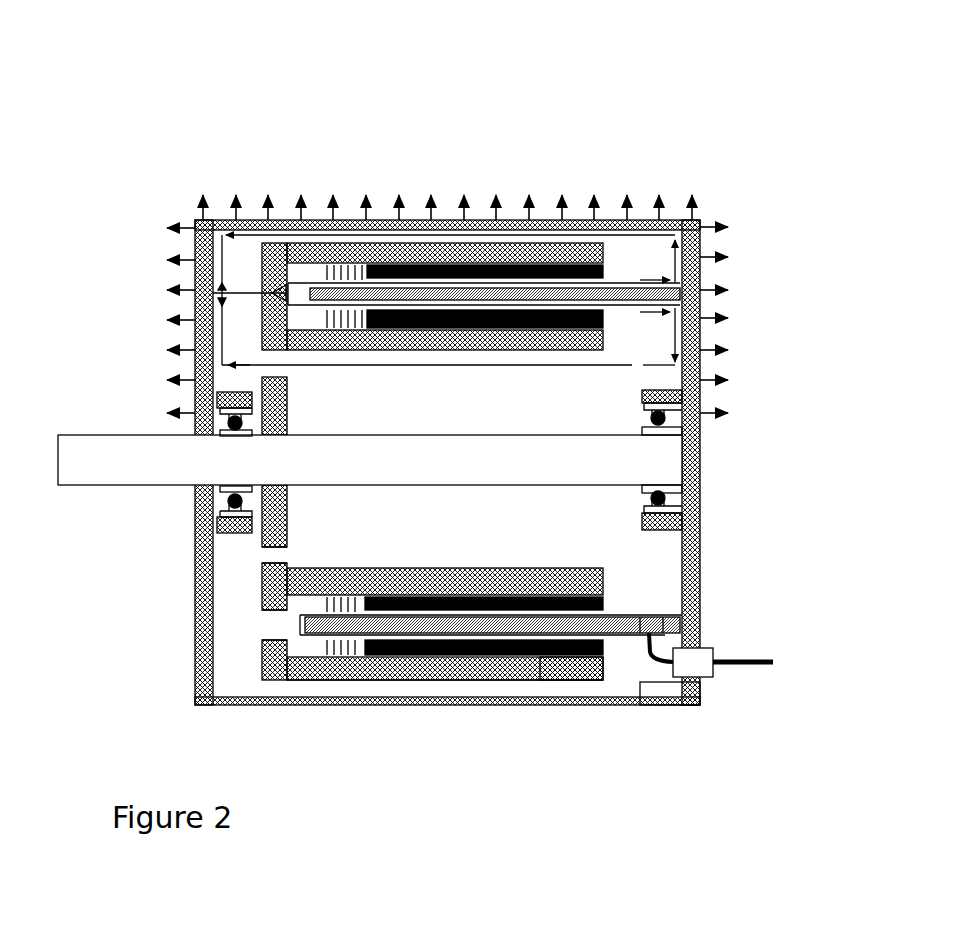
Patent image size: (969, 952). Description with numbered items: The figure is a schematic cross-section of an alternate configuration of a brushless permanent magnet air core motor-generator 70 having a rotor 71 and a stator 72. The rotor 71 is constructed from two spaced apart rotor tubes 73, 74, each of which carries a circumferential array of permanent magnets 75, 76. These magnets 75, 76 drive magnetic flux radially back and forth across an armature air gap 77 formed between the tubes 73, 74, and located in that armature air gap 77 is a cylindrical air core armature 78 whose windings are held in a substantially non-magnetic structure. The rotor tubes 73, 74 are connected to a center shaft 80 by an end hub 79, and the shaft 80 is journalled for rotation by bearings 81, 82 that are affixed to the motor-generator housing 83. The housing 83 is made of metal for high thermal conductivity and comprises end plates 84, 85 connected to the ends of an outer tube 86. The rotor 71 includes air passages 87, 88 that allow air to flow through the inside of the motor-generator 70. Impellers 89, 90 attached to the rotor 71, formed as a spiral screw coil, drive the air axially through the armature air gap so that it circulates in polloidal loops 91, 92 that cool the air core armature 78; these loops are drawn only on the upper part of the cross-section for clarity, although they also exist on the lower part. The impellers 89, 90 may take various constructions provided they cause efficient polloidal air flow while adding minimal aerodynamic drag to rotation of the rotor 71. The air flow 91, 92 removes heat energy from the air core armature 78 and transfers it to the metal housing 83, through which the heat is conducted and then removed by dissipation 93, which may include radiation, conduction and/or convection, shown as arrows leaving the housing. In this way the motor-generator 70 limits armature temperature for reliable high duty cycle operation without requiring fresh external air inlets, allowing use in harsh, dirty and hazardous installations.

The brushless permanent magnet air core motor-generator 70 is at (186, 70).
The rotor 71 is at (497, 692).
The stator 72 is at (668, 598).
The rotor tube 73 is at (556, 681).
The rotor tube 74 is at (477, 567).
The permanent magnets 75 is at (418, 681).
The permanent magnets 76 is at (412, 590).
The armature air gap 77 is at (614, 611).
The air core armature 78 is at (620, 632).
The end hub 79 is at (287, 505).
The center shaft 80 is at (408, 432).
The bearing 81 is at (700, 437).
The bearing 82 is at (212, 497).
The motor-generator housing 83 is at (669, 716).
The end plate 84 is at (700, 497).
The end plate 85 is at (195, 603).
The outer tube 86 is at (255, 706).
The air passage 87 is at (256, 620).
The air passage 88 is at (256, 552).
The impeller 89 is at (333, 600).
The impeller 90 is at (333, 656).
The polloidal loop 91 is at (645, 238).
The polloidal loop 92 is at (630, 364).
The dissipation 93 is at (538, 212).